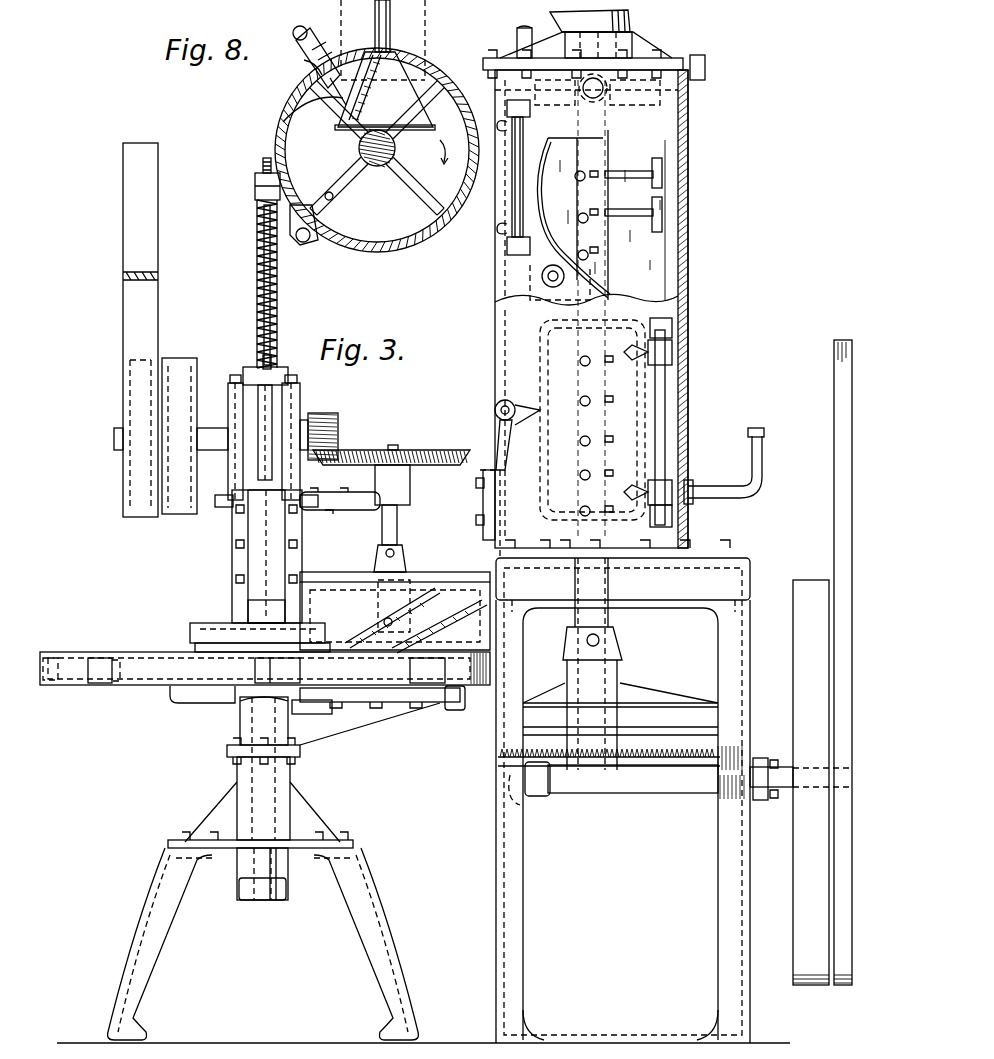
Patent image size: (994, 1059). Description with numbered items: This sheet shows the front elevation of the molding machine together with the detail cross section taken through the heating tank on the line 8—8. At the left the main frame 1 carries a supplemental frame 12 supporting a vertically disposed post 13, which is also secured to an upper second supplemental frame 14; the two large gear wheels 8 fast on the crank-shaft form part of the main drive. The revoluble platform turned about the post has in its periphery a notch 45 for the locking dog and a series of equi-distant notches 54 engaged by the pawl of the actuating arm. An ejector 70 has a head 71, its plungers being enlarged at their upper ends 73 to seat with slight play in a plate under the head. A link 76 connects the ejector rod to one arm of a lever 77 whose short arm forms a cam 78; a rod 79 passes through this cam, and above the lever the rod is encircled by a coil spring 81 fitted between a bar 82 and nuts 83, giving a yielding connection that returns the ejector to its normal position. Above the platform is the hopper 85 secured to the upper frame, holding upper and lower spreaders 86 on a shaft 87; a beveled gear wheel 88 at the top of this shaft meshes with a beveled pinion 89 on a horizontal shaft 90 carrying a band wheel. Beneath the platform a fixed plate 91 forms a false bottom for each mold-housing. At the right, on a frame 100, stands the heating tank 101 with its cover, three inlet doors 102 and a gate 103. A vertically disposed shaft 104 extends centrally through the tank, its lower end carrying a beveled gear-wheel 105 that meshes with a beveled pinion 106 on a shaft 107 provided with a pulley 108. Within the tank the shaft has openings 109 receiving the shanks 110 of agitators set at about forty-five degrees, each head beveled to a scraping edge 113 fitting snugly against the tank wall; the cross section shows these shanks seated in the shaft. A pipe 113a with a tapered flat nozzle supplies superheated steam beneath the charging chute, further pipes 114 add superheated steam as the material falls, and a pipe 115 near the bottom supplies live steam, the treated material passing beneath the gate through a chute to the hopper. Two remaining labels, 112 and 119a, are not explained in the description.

In FIG. 3, the main frame 1 is at (263, 936).
In FIG. 3, the large gear wheels 8 is at (495, 90).
In FIG. 3, the supplemental frame 12 is at (292, 782).
In FIG. 3, the post 13 is at (270, 900).
In FIG. 3, the upper second supplemental frame 14 is at (233, 560).
In FIG. 3, the notch 45 is at (52, 682).
In FIG. 3, the notches 54 is at (102, 662).
In FIG. 3, the ejector 70 is at (255, 505).
In FIG. 3, the head 71 is at (205, 623).
In FIG. 3, the enlarged upper end 73 is at (195, 646).
In FIG. 3, the link 76 is at (258, 450).
In FIG. 3, the lever 77 is at (290, 400).
In FIG. 3, the cam 78 is at (270, 385).
In FIG. 3, the rod 79 is at (279, 290).
In FIG. 3, the coil spring 81 is at (263, 312).
In FIG. 3, the bar 82 is at (270, 360).
In FIG. 3, the nuts 83 is at (256, 195).
In FIG. 3, the hopper 85 is at (450, 565).
In FIG. 3, the spreaders 86 is at (392, 596).
In FIG. 3, the shaft 87 is at (397, 530).
In FIG. 3, the beveled gear wheel 88 is at (420, 452).
In FIG. 3, the beveled pinion 89 is at (336, 430).
In FIG. 3, the horizontal shaft 90 is at (308, 425).
In FIG. 3, the fixed plate 91 is at (192, 703).
In FIG. 3, the frame 100 is at (725, 885).
In FIG. 8, the heating tank 101 is at (388, 246).
In FIG. 3, the heating tank 101 is at (688, 262).
In FIG. 8, the inlet doors 102 is at (300, 118).
In FIG. 3, the inlet doors 102 is at (512, 200).
In FIG. 3, the gate 103 is at (483, 505).
In FIG. 8, the shaft 104 is at (392, 160).
In FIG. 3, the shaft 104 is at (598, 145).
In FIG. 3, the beveled gear-wheel 105 is at (658, 745).
In FIG. 3, the beveled pinion 106 is at (722, 800).
In FIG. 3, the shaft 107 is at (658, 780).
In FIG. 3, the pulley 108 is at (798, 842).
In FIG. 8, the openings 109 is at (362, 188).
In FIG. 3, the openings 109 is at (640, 168).
In FIG. 8, the shanks 110 is at (337, 197).
In FIG. 3, the shanks 110 is at (670, 158).
In FIG. 8, the bracket 112 is at (320, 212).
In FIG. 3, the bracket 112 is at (664, 170).
In FIG. 8, the scraping edge 113 is at (350, 188).
In FIG. 3, the scraping edge 113 is at (664, 200).
In FIG. 3, the pipe 113a is at (588, 100).
In FIG. 3, the pipes 114 is at (542, 280).
In FIG. 3, the pipe 115 is at (720, 478).
In FIG. 8, the clamp 119a is at (308, 100).
In FIG. 3, the clamp 119a is at (623, 590).